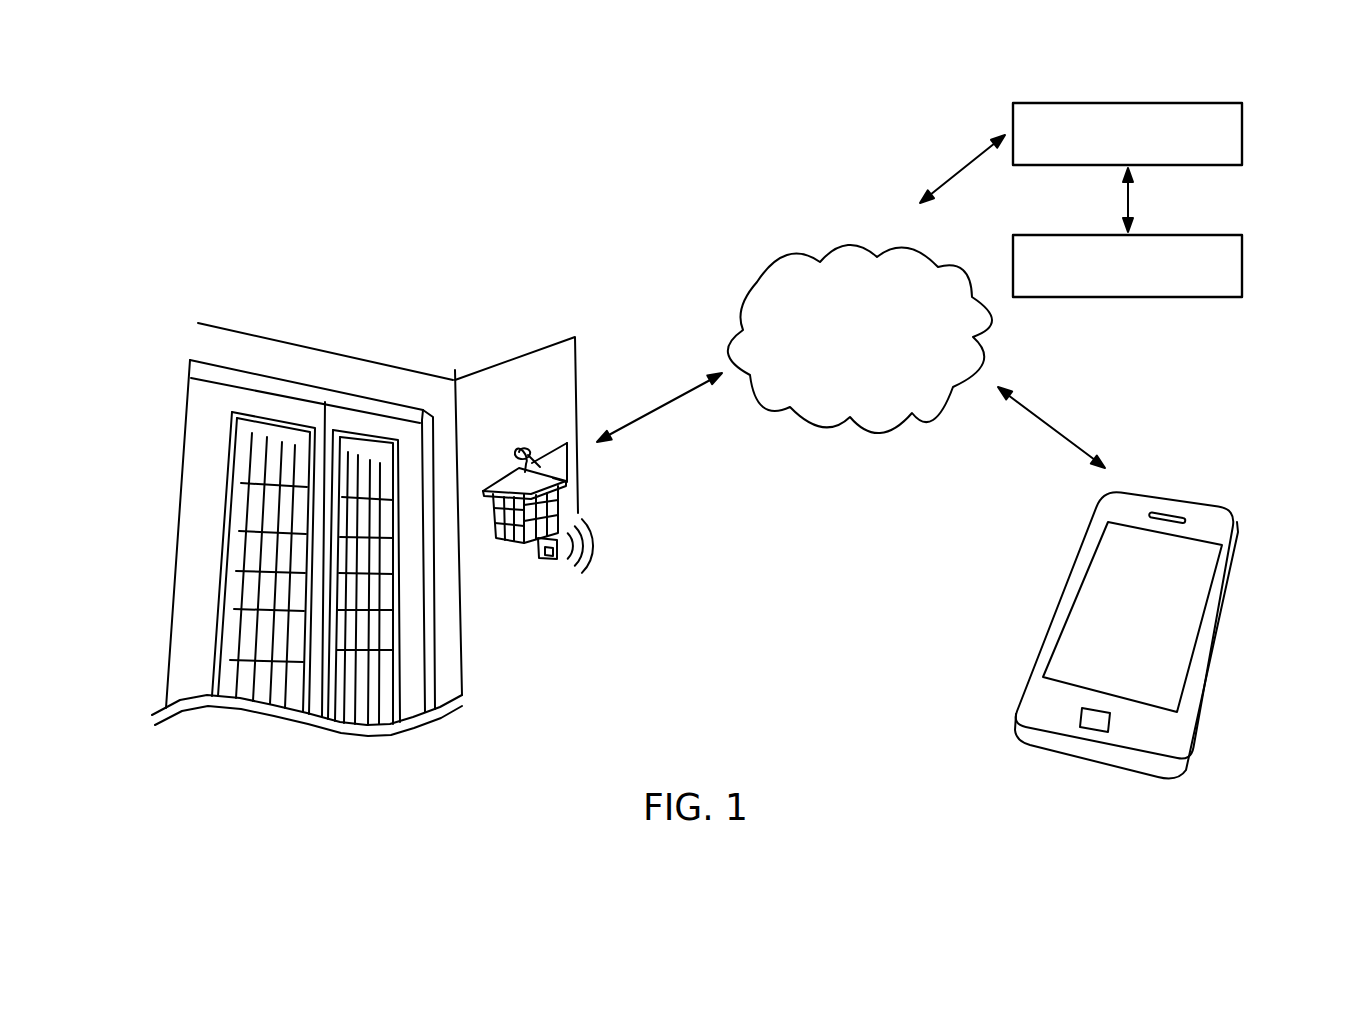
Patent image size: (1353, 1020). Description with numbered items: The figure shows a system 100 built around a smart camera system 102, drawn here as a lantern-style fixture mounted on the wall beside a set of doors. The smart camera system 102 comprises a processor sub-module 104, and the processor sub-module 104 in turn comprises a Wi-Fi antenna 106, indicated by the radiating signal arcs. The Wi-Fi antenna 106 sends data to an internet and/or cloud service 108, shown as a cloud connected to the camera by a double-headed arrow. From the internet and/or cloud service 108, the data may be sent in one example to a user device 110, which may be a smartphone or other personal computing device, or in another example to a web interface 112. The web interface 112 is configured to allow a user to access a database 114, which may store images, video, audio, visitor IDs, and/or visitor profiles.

The system 100 is at (572, 80).
The smart camera system 102 is at (517, 468).
The processor sub-module 104 is at (542, 562).
The Wi-Fi antenna 106 is at (552, 558).
The internet and/or cloud service 108 is at (795, 257).
The user device 110 is at (1172, 495).
The web interface 112 is at (1070, 103).
The database 114 is at (1070, 235).